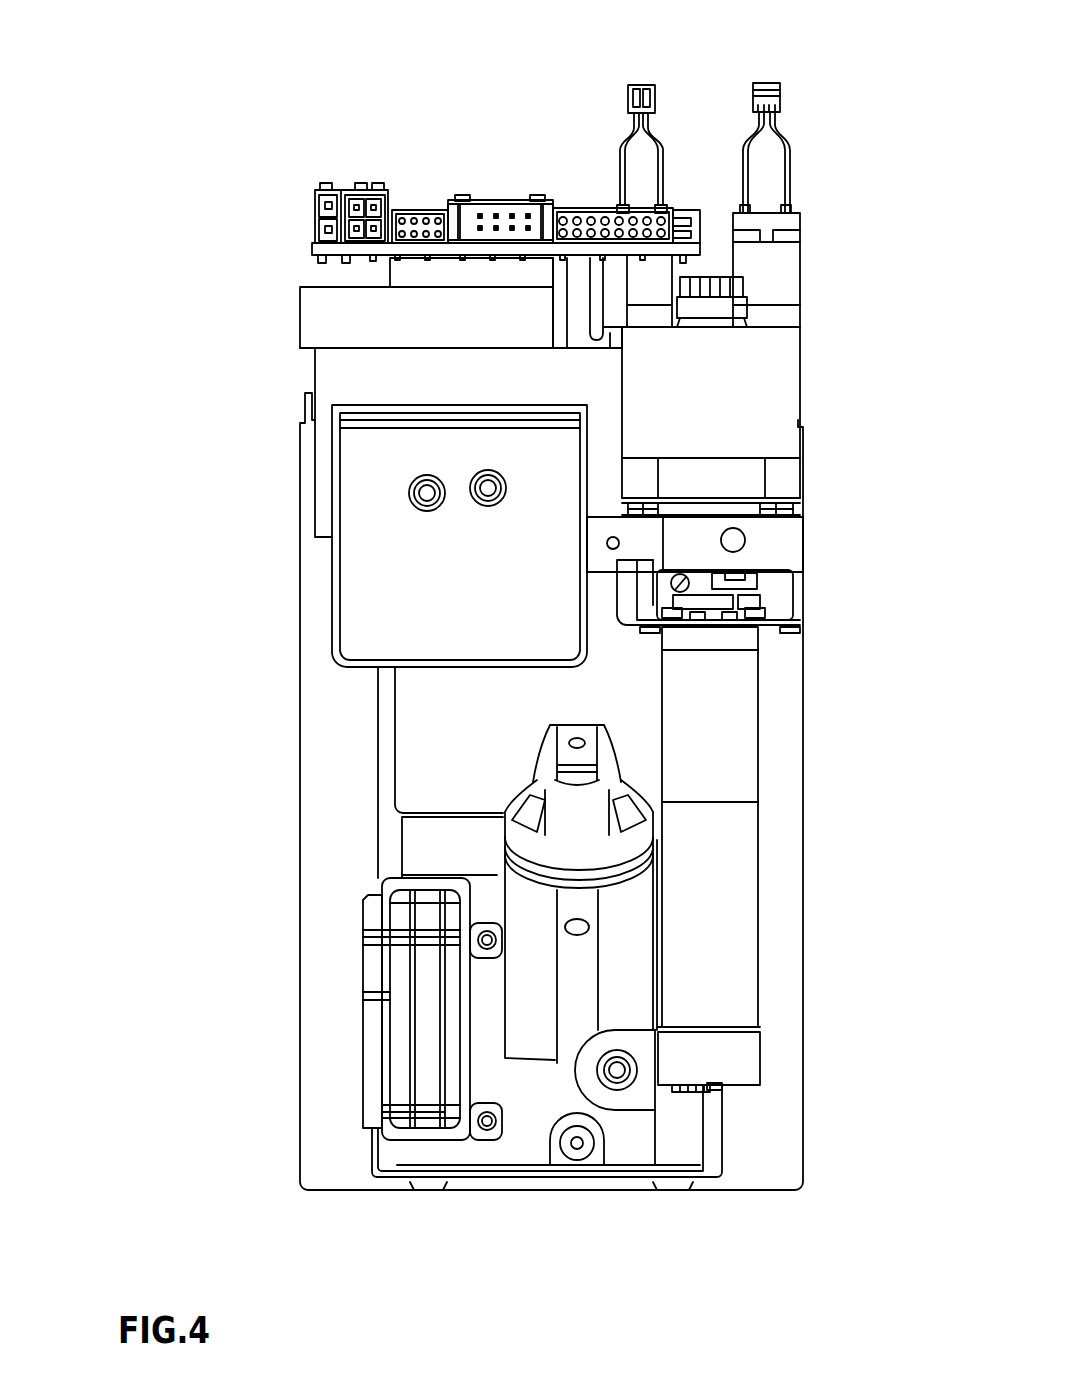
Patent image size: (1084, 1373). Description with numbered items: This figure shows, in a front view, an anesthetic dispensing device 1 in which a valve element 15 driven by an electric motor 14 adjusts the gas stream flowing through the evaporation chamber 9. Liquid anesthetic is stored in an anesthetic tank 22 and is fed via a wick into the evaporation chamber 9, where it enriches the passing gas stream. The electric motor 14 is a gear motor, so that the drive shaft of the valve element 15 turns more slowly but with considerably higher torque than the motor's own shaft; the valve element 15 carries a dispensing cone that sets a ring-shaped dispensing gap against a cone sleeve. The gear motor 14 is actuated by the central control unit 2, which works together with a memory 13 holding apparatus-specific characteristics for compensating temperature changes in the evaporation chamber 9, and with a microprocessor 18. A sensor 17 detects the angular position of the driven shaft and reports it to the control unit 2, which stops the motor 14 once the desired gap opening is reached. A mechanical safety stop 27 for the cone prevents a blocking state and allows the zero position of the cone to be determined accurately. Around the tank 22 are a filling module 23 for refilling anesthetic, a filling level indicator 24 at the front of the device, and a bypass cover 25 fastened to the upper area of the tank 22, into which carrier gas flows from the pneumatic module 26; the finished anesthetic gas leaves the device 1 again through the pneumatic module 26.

The anesthetic dispensing device 1 is at (222, 210).
The control unit 2 is at (350, 155).
The evaporation chamber 9 is at (505, 706).
The memory 13 is at (455, 278).
The electric motor 14 is at (777, 910).
The valve element 15 is at (767, 390).
The sensor for detecting movement 17 is at (710, 627).
The microprocessor 18 is at (532, 275).
The anesthetic tank 22 is at (443, 847).
The filling module 23 is at (533, 1123).
The filling level indicator 24 is at (428, 1030).
The bypass cover 25 is at (355, 378).
The pneumatic module 26 is at (288, 312).
The safety stop 27 is at (750, 588).